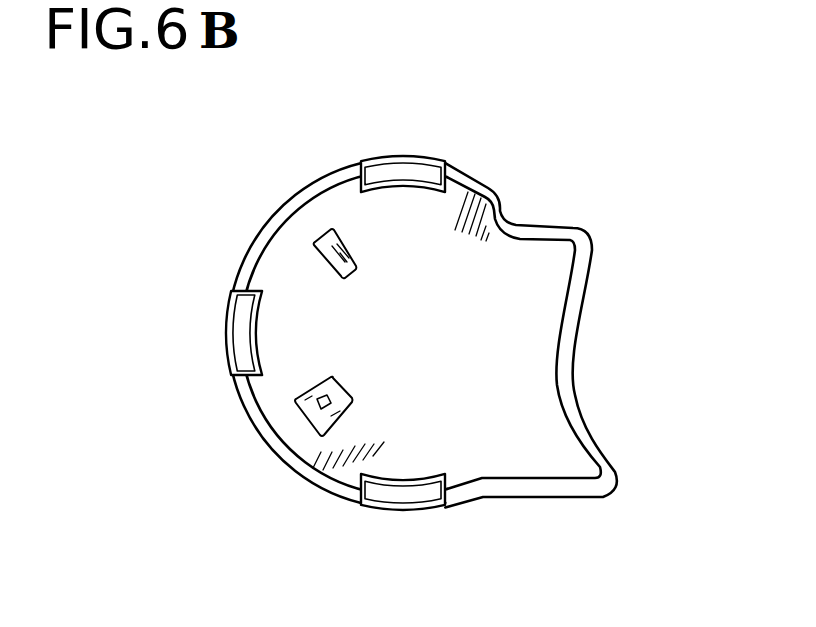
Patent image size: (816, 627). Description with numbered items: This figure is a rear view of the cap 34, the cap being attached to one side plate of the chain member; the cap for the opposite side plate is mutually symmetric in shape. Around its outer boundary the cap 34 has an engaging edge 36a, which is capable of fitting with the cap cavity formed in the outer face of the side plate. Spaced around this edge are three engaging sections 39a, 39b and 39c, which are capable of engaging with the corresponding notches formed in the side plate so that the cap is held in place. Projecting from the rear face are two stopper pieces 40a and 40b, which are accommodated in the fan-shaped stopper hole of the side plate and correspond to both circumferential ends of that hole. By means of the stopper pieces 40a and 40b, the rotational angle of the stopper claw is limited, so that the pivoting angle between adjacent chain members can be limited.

The cap 34 is at (563, 272).
The engaging edge 36a is at (575, 388).
The engaging section 39a is at (420, 497).
The engaging section 39b is at (241, 340).
The engaging section 39c is at (418, 166).
The stopper piece 40a is at (323, 231).
The stopper piece 40b is at (312, 423).